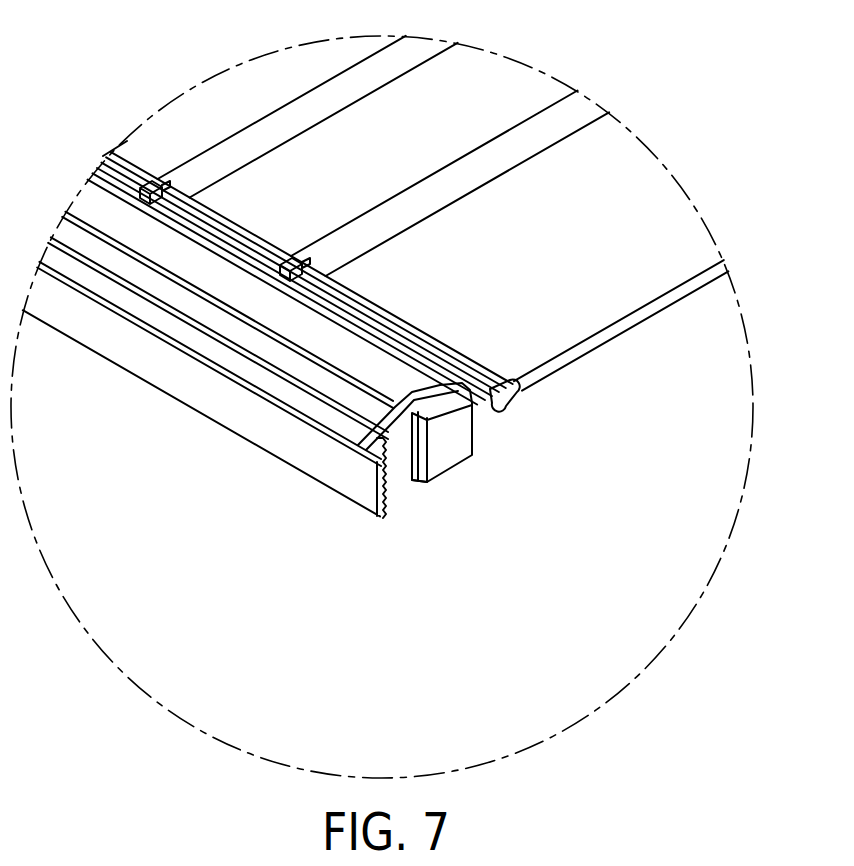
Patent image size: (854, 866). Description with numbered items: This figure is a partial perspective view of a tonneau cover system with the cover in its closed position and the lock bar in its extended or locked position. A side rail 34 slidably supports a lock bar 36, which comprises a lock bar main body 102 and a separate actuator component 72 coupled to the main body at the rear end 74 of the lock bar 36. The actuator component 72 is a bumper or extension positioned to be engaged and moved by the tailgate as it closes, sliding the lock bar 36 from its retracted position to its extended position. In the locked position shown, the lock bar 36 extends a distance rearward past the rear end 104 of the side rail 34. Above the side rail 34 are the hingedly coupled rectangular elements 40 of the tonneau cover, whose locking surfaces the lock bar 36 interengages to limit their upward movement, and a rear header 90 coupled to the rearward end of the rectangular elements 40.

The side rail 34 is at (240, 442).
The lock bar 36 is at (424, 398).
The rectangular elements 40 is at (489, 95).
The actuator component 72 is at (447, 455).
The rear end 74 is at (438, 503).
The rear header 90 is at (681, 217).
The lock bar main body 102 is at (445, 393).
The rear end 104 is at (395, 445).